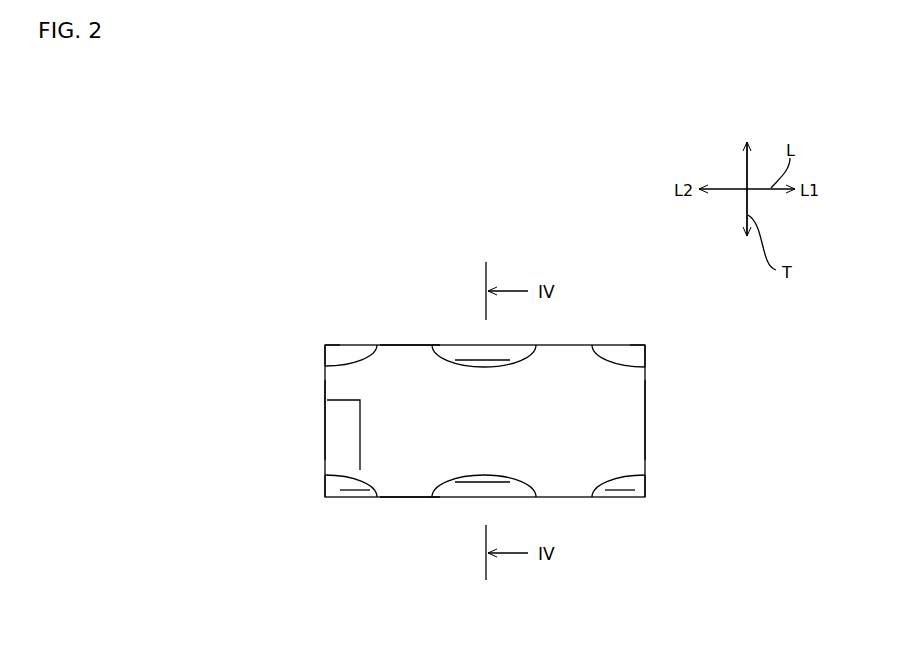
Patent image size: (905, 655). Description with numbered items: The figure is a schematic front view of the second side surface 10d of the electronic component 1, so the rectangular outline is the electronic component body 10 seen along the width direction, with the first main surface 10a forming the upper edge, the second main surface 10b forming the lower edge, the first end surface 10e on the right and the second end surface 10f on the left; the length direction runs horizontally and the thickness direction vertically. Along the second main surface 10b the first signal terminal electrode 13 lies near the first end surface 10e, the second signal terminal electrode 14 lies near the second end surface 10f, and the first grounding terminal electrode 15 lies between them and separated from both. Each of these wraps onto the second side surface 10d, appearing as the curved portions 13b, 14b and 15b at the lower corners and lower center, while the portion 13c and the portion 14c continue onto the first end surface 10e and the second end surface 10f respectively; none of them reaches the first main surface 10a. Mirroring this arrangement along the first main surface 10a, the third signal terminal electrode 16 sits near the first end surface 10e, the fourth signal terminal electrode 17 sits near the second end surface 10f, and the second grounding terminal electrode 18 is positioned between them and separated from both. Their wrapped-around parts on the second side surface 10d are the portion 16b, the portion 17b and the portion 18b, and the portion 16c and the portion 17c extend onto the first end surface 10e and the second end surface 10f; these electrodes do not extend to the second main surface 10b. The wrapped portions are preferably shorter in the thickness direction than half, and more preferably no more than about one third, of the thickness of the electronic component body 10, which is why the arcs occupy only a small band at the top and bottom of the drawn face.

The electronic component 1 is at (606, 320).
The electronic component body 10 is at (385, 343).
The first main surface 10a is at (410, 343).
The second main surface 10b is at (410, 499).
The second side surface 10d is at (350, 443).
The first end surface 10e is at (647, 423).
The second end surface 10f is at (325, 423).
The first signal terminal electrode 13 is at (636, 499).
The portion of the first signal terminal electrode disposed on the second side surfa 13b is at (618, 493).
The portion of the first signal terminal electrode disposed on the first end surface 13c is at (645, 485).
The second signal terminal electrode 14 is at (343, 499).
The portion of the second signal terminal electrode disposed on the second side surf 14b is at (355, 492).
The portion of the second signal terminal electrode disposed on the second end surfa 14c is at (325, 485).
The first grounding terminal electrode 15 is at (470, 499).
The portion of the first grounding terminal electrode disposed on the second side su 15b is at (462, 493).
The third signal terminal electrode 16 is at (633, 342).
The portion of the third signal terminal electrode disposed on the second side surfa 16b is at (637, 350).
The portion of the third signal terminal electrode disposed on the first end surface 16c is at (647, 357).
The fourth signal terminal electrode 17 is at (336, 342).
The portion of the fourth signal terminal electrode disposed on the second side surf 17b is at (325, 347).
The portion of the fourth signal terminal electrode disposed on the second end surfa 17c is at (324, 362).
The second grounding terminal electrode 18 is at (470, 342).
The portion of the second grounding terminal electrode disposed on the second side s 18b is at (458, 356).